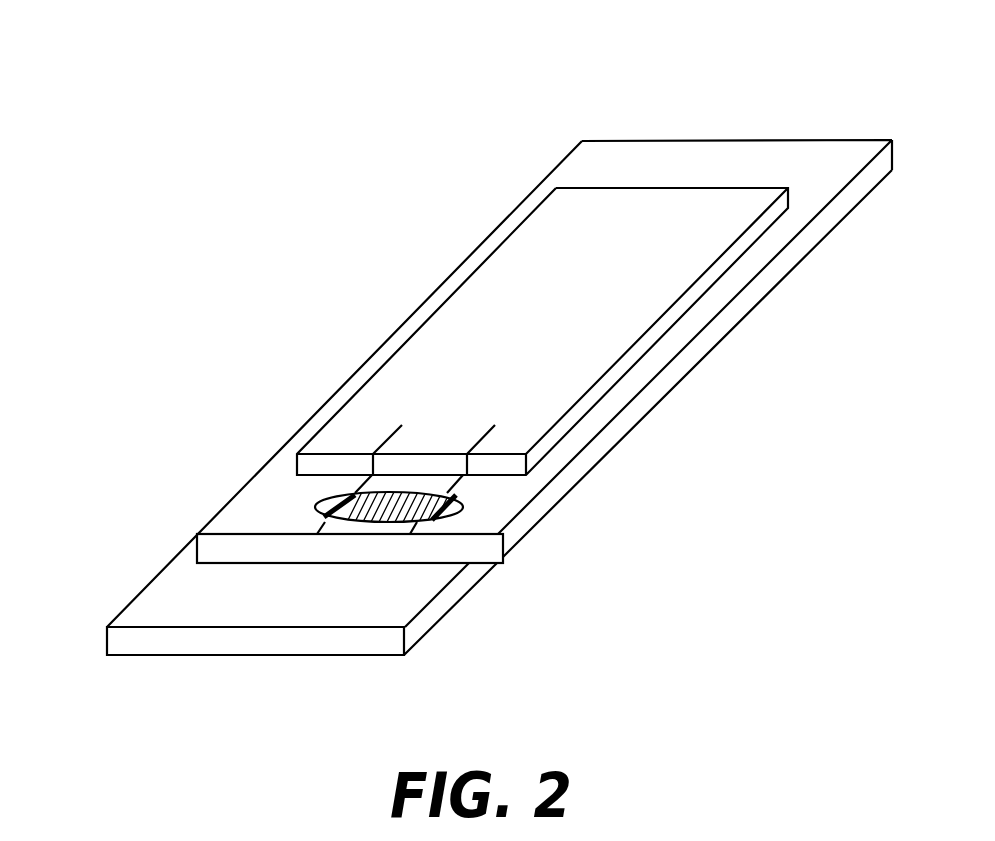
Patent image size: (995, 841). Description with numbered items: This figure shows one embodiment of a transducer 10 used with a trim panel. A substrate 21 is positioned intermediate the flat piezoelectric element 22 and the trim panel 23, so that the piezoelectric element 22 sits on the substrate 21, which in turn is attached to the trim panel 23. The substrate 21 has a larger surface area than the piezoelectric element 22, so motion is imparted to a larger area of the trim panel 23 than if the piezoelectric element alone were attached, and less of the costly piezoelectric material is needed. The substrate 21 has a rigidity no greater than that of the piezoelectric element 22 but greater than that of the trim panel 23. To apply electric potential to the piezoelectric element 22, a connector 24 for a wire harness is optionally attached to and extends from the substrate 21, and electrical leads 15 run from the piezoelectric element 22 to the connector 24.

The piezoelectric vibrator assembly 10 is at (214, 339).
The electrical leads 15 is at (322, 513).
The substrate 21 is at (835, 165).
The piezoelectric element 22 is at (643, 217).
The trim panel 23 is at (130, 637).
The connector 24 is at (466, 510).